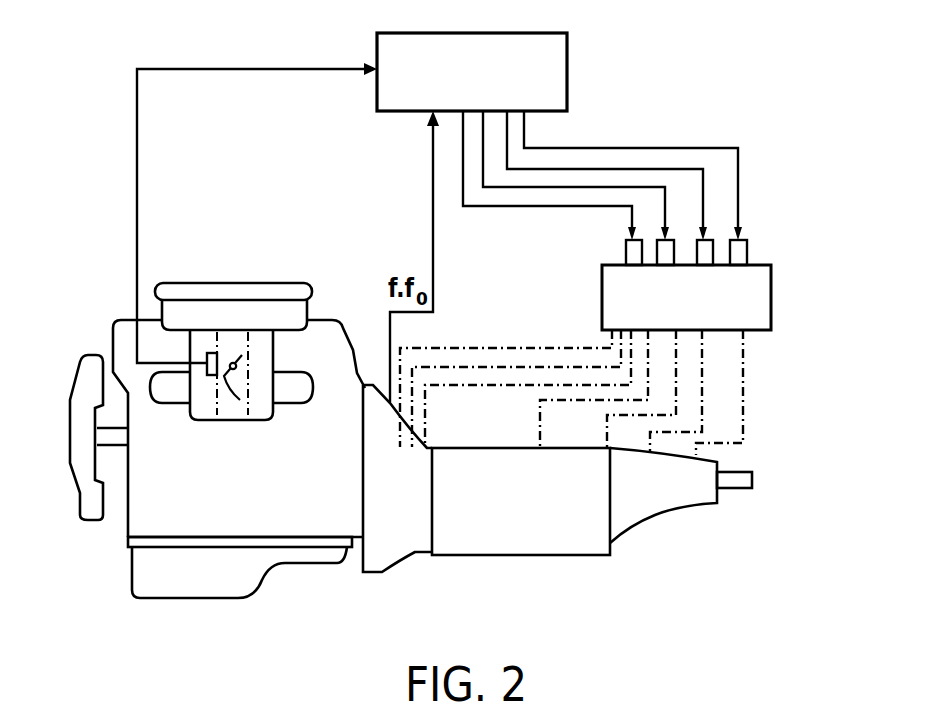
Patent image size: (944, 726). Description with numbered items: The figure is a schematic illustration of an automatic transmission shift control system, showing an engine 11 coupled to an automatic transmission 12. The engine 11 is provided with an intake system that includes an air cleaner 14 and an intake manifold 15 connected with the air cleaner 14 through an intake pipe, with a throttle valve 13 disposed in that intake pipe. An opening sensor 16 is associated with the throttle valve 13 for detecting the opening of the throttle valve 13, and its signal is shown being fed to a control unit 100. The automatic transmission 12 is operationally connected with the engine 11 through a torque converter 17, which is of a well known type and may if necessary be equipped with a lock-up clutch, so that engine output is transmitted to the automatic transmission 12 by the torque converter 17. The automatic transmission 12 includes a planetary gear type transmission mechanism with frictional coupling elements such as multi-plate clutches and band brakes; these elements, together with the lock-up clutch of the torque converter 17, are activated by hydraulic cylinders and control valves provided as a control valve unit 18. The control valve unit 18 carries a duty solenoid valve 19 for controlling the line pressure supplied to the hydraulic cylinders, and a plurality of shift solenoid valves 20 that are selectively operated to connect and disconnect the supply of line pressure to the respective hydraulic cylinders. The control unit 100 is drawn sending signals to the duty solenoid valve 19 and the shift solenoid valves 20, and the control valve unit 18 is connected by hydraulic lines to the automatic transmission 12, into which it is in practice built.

The control unit 100 is at (568, 48).
The engine 11 is at (127, 518).
The automatic transmission 12 is at (535, 557).
The throttle valve 13 is at (240, 400).
The air cleaner 14 is at (240, 283).
The intake manifold 15 is at (288, 405).
The opening sensor 16 is at (207, 378).
The torque converter 17 is at (397, 563).
The control valve unit 18 is at (602, 292).
The duty solenoid valve 19 is at (626, 255).
The shift solenoid valves 20 is at (676, 238).